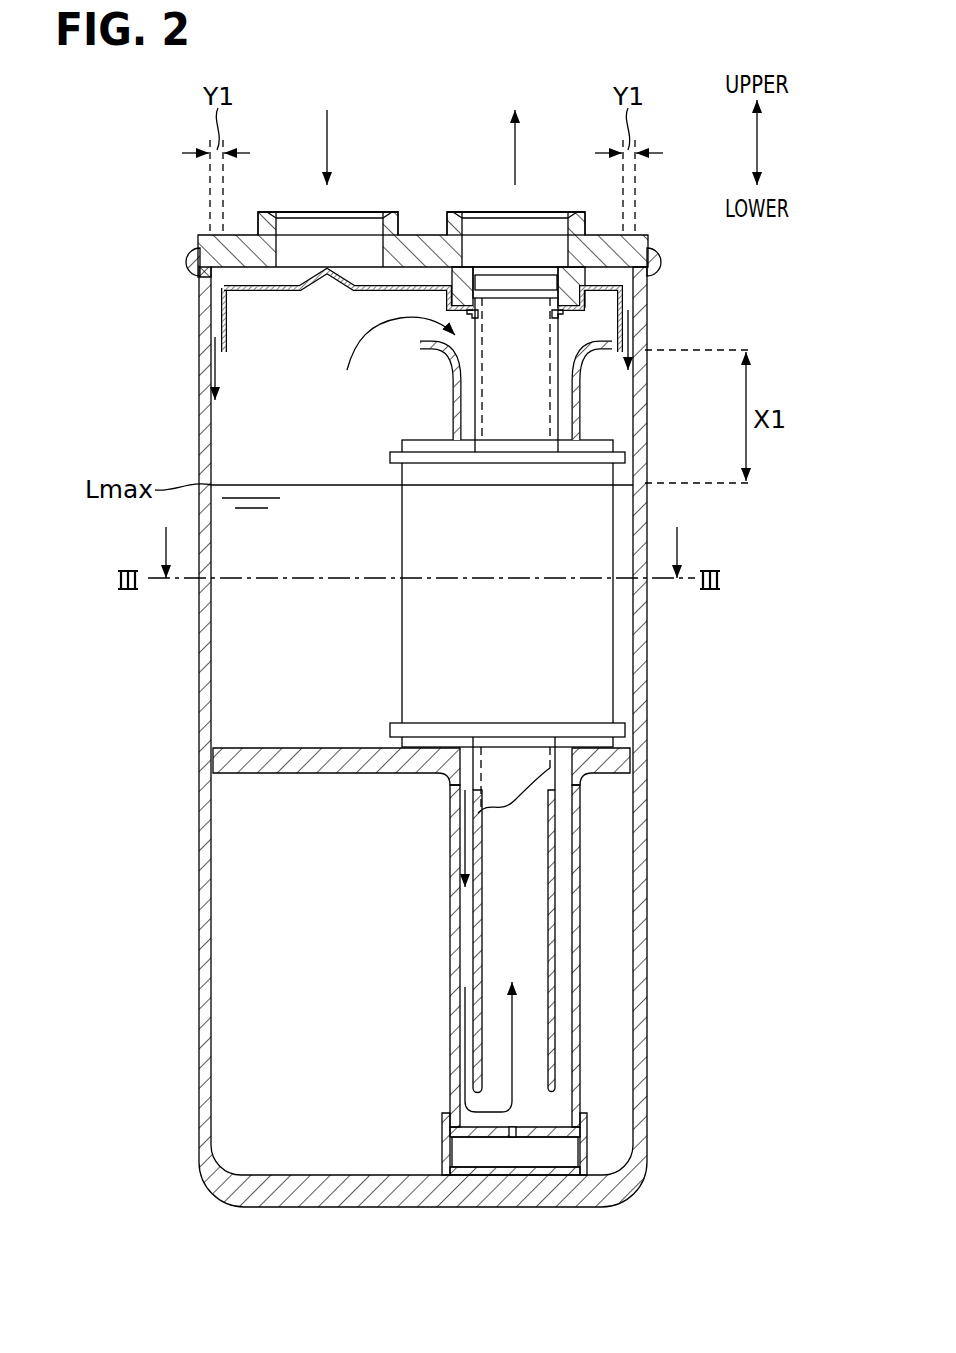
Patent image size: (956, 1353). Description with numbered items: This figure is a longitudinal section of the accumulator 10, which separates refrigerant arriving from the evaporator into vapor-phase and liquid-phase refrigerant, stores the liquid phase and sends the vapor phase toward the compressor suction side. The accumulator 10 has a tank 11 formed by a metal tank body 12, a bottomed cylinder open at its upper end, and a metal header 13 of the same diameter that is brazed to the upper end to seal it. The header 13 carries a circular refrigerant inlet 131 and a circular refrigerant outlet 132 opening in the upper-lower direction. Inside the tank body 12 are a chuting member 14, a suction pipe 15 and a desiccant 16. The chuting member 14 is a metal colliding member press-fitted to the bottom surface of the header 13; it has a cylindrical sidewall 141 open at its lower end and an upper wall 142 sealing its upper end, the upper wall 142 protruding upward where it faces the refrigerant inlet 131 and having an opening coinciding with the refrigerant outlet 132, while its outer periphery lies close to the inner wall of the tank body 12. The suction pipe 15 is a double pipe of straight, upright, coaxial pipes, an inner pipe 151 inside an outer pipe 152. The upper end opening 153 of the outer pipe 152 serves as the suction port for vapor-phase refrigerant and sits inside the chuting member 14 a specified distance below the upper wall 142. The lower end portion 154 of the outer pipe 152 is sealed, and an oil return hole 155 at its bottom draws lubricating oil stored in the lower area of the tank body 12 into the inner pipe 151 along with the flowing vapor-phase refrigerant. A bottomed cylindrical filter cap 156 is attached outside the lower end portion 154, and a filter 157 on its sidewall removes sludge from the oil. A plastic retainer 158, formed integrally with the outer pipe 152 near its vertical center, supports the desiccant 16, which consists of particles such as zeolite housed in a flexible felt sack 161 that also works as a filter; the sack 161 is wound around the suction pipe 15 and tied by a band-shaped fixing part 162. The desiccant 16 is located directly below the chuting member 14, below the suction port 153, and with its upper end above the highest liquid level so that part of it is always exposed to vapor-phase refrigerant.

The accumulator 10 is at (170, 187).
The tank 11 is at (97, 240).
The tank body 12 is at (200, 310).
The header 13 is at (198, 238).
The chuting member 14 is at (103, 392).
The sidewall 141 is at (220, 345).
The upper wall 142 is at (283, 292).
The suction pipe 15 is at (742, 855).
The inner pipe 151 is at (555, 868).
The outer pipe 152 is at (580, 912).
The upper end opening 153 is at (563, 357).
The lower end portion 154 is at (564, 1175).
The oil return hole 155 is at (517, 1130).
The filter cap 156 is at (490, 1155).
The filter 157 is at (443, 1153).
The retainer 158 is at (265, 748).
The desiccant 16 is at (563, 546).
The sack 161 is at (613, 610).
The fixing part 162 is at (625, 455).
The refrigerant inlet 131 is at (345, 232).
The refrigerant outlet 132 is at (492, 232).